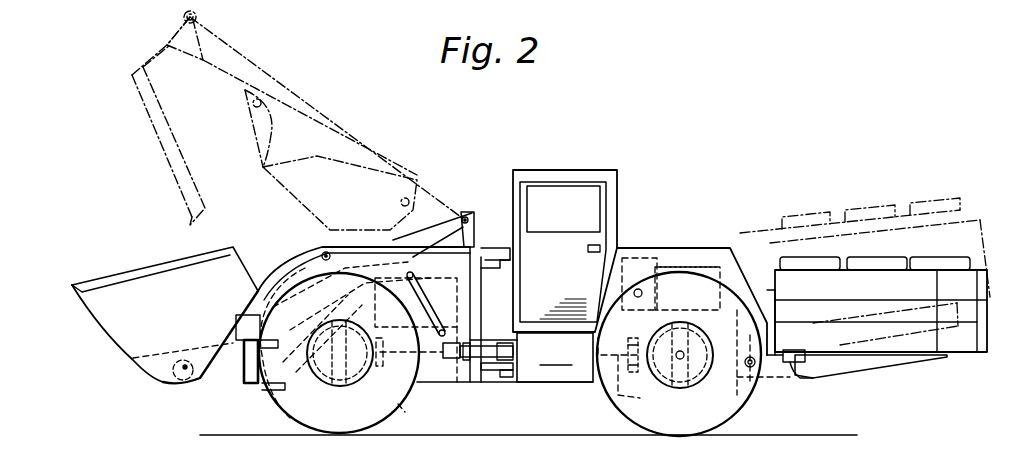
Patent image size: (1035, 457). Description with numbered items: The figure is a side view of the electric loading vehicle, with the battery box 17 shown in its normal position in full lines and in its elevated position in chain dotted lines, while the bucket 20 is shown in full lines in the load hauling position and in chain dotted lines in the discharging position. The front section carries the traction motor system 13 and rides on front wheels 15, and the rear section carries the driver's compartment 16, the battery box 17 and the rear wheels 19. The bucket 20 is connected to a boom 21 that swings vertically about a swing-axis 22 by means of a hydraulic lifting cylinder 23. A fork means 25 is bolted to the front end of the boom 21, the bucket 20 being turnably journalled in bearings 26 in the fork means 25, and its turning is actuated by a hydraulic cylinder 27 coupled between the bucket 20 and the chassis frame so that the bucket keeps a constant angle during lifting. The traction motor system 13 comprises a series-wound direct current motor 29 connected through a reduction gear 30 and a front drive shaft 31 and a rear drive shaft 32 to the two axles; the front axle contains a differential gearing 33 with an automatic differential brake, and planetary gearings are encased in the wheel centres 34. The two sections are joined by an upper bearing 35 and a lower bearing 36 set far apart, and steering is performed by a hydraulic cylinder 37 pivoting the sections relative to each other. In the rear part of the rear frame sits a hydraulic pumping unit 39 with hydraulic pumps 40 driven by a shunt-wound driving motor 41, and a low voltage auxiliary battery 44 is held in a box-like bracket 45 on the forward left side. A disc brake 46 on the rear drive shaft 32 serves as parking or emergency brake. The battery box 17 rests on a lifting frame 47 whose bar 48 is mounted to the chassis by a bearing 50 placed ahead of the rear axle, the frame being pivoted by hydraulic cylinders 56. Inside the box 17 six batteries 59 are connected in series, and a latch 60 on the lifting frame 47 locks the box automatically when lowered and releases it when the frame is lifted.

The traction motor system 13 is at (497, 253).
The wheels 15 is at (350, 415).
The driver's compartment 16 is at (577, 177).
The battery box 17 is at (970, 288).
The wheels 19 is at (697, 417).
The bucket 20 is at (118, 318).
The boom 21 is at (317, 192).
The swing-axis 22 is at (408, 273).
The hydraulic lifting cylinder 23 is at (288, 268).
The fork means 25 is at (220, 367).
The bearings 26 is at (183, 366).
The hydraulic cylinder 27 is at (412, 277).
The series-wound direct current motor 29 is at (430, 327).
The reduction gear 30 is at (480, 365).
The front drive shaft 31 is at (395, 405).
The rear drive shaft 32 is at (613, 412).
The differential gearing 33 is at (289, 409).
The wheel centres 34 is at (325, 387).
The upper bearing 35 is at (493, 250).
The lower bearing 36 is at (508, 376).
The hydraulic cylinder 37 is at (488, 382).
The hydraulic pumping unit 39 is at (677, 257).
The hydraulic pumps 40 is at (630, 257).
The driving motor 41 is at (710, 265).
The auxiliary battery 44 is at (542, 363).
The box-like bracket 45 is at (559, 355).
The disc brake 46 is at (630, 383).
The lifting frame 47 is at (857, 358).
The bar 48 is at (745, 392).
The bearing 50 is at (648, 257).
The hydraulic cylinders 56 is at (766, 384).
The batteries 59 is at (947, 262).
The latch 60 is at (800, 378).